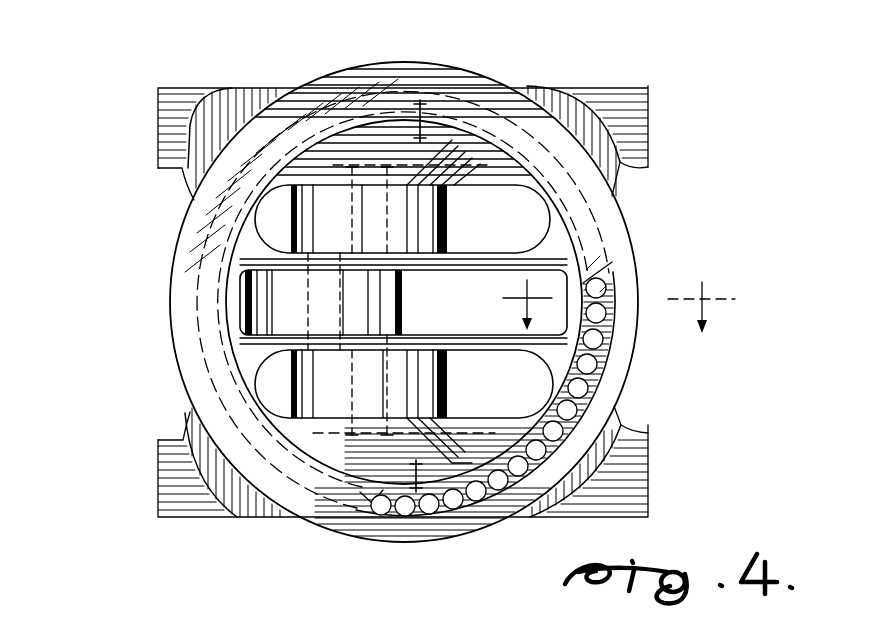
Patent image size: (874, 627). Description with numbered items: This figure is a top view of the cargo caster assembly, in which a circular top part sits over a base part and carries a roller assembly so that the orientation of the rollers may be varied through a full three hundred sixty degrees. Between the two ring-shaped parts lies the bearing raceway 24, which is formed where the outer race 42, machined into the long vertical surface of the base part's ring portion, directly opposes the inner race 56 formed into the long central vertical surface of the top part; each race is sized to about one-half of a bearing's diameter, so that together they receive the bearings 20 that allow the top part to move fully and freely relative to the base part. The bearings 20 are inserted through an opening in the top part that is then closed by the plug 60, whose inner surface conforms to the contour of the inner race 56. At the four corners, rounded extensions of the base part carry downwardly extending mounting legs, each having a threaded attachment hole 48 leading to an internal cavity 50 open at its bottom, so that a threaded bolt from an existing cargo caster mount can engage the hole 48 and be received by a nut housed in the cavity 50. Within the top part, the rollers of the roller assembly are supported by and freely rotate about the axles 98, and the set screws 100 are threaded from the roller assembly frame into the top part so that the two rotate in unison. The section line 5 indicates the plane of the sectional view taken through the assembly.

The section line 5- 5 is at (608, 296).
The bearings 20 is at (592, 358).
The bearing raceway 24 is at (212, 310).
The outer race 42 is at (207, 353).
The threaded attachment hole 48 is at (168, 128).
The internal cavity 50 is at (203, 84).
The inner race 56 is at (185, 395).
The plug 60 is at (612, 262).
The axles 98 is at (360, 213).
The set screws 100 is at (420, 96).